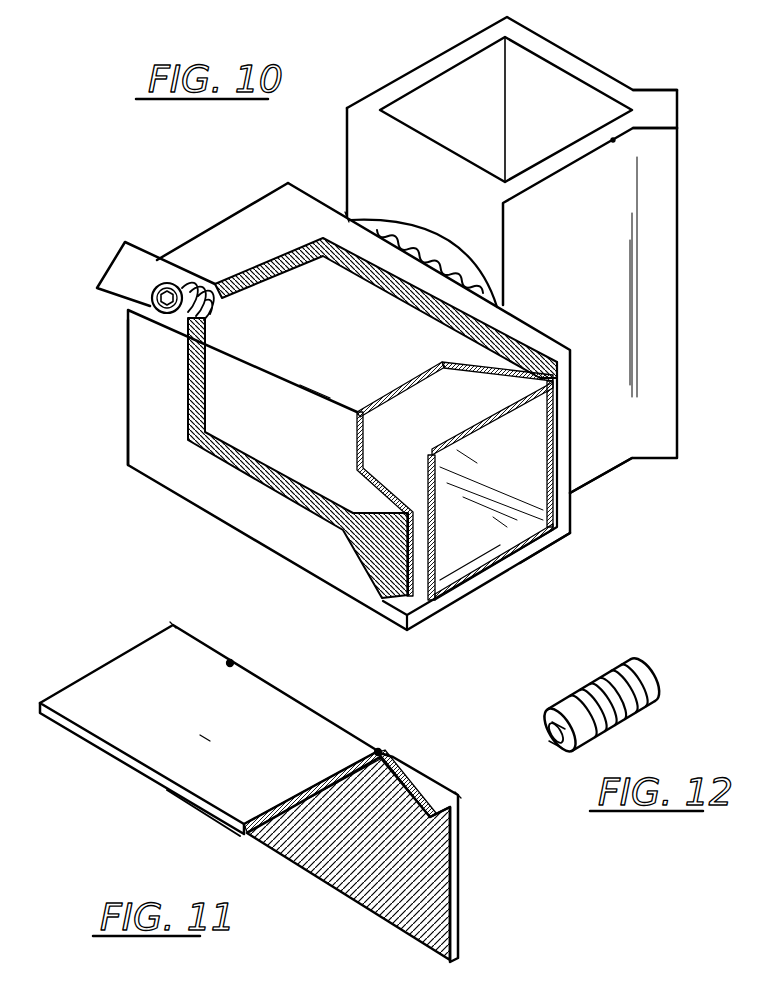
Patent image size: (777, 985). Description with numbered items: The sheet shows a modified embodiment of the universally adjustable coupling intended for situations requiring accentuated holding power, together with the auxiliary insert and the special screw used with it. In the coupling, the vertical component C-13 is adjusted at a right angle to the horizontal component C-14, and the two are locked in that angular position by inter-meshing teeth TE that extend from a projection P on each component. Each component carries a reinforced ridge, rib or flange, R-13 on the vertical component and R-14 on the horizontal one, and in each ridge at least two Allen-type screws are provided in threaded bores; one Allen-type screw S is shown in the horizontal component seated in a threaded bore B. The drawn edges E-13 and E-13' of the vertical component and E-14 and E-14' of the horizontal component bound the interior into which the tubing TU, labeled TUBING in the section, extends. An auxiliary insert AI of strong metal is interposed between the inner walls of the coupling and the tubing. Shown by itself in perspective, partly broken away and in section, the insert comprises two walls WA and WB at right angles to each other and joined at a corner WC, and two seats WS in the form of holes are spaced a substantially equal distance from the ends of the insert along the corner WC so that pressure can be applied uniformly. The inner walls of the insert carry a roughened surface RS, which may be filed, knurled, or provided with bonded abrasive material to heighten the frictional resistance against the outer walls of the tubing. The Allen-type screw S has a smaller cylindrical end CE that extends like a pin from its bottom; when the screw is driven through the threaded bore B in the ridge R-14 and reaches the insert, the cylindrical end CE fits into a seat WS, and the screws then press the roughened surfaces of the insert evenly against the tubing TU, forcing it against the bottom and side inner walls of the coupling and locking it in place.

In FIG. 10, the vertical component C-13 is at (433, 97).
In FIG. 10, the inner edge of casing E-13 is at (506, 96).
In FIG. 10, the reinforced ridge R-13 is at (650, 110).
In FIG. 10, the projection P is at (347, 217).
In FIG. 10, the inter-meshing teeth TE is at (388, 223).
In FIG. 10, the horizontal component C-14 is at (349, 402).
In FIG. 10, the reinforced ridge R-14 is at (113, 275).
In FIG. 10, the Allen-type screw S is at (128, 312).
In FIG. 12, the Allen-type screw S is at (647, 683).
In FIG. 10, the threaded bore B is at (188, 343).
In FIG. 10, the auxiliary insert AI is at (298, 366).
In FIG. 11, the auxiliary insert AI is at (221, 748).
In FIG. 10, the edge of cover E-14 is at (91, 392).
In FIG. 10, the tubing TU is at (455, 481).
In FIG. 10, the lower edge of casing E-13' is at (631, 486).
In FIG. 10, the lower edge of cover E-14' is at (573, 558).
In FIG. 10, the tubing liner TUBING is at (465, 557).
In FIG. 11, the wall WB is at (123, 667).
In FIG. 11, the seat WS is at (238, 664).
In FIG. 11, the corner WC is at (173, 623).
In FIG. 11, the wall WA is at (453, 870).
In FIG. 11, the roughened surface RS is at (362, 907).
In FIG. 12, the cylindrical end CE is at (542, 740).